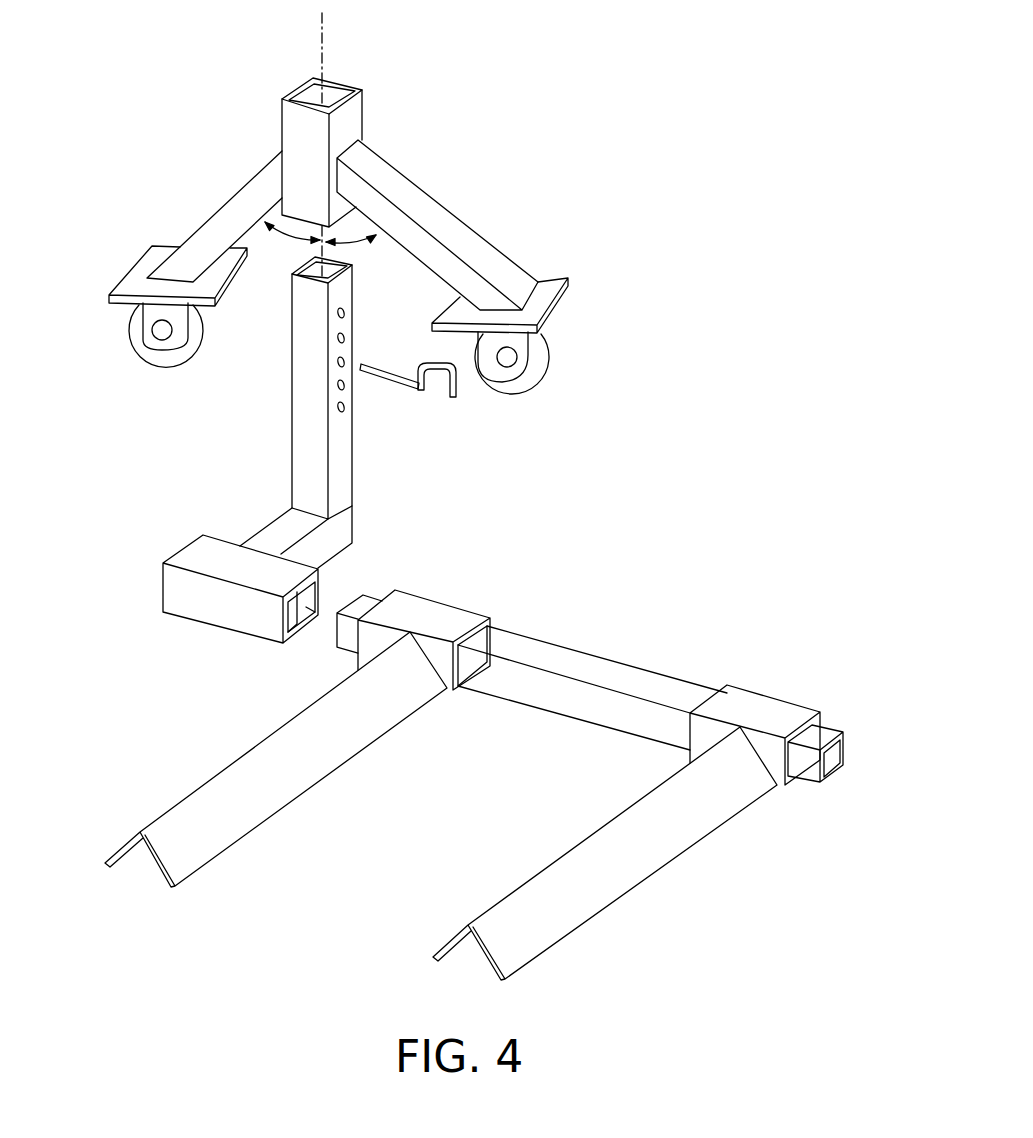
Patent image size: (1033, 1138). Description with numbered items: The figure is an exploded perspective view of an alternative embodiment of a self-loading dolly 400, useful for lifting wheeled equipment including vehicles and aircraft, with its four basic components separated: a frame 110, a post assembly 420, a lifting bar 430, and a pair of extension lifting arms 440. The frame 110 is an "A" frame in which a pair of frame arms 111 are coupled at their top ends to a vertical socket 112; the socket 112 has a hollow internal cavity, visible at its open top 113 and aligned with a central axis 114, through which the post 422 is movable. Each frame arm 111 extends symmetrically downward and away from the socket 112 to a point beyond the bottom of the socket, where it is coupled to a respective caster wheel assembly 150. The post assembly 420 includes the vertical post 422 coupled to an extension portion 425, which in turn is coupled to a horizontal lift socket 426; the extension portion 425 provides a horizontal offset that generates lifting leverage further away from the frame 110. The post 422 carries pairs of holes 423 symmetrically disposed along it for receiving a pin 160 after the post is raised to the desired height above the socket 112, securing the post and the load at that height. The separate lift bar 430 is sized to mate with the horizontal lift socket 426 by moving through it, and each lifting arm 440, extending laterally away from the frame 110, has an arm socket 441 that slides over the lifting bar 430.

The self-loading dolly 400 is at (636, 113).
The frame 110 is at (166, 116).
The frame arms 111 is at (218, 210).
The vertical socket 112 is at (300, 128).
The column opening 113 is at (330, 97).
The central axis 114 is at (320, 42).
The caster wheel assembly 150 is at (148, 262).
The pin 160 is at (457, 393).
The post assembly 420 is at (235, 443).
The vertical post 422 is at (356, 455).
The holes 423 is at (348, 338).
The extension portion 425 is at (267, 527).
The horizontal lift socket 426 is at (197, 556).
The lift bar 430 is at (604, 648).
The extension lifting arms 440 is at (138, 805).
The arm socket 441 is at (445, 602).